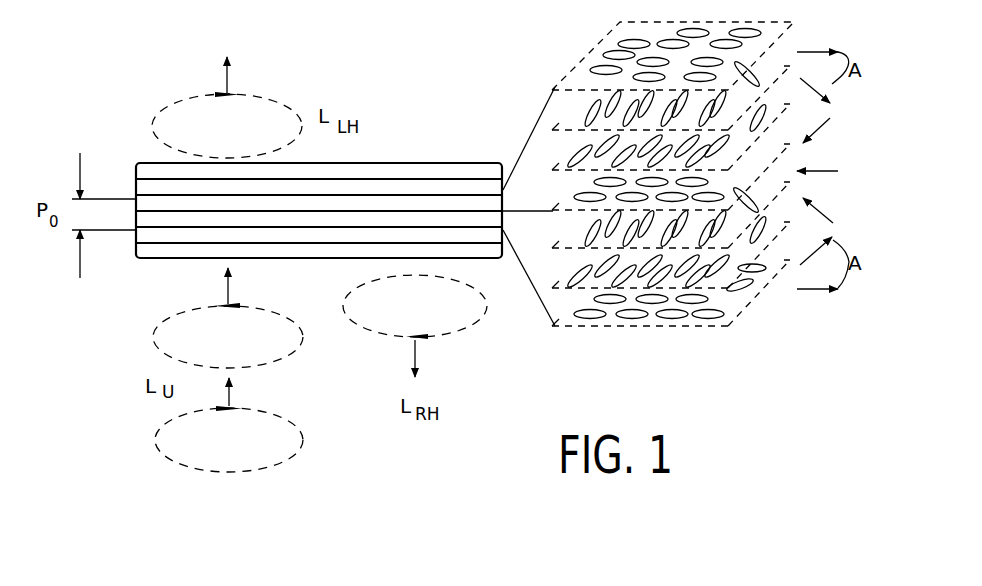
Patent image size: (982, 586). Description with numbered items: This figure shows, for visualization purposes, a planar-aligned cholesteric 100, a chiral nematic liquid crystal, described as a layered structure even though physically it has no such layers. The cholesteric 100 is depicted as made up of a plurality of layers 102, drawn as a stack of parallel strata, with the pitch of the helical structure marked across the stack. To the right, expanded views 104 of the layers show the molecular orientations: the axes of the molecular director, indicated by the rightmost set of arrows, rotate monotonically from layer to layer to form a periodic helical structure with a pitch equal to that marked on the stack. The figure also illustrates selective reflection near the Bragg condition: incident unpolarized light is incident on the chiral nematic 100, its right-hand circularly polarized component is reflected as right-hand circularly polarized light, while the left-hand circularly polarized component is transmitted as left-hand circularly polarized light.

The planar-aligned cholesteric 100 is at (300, 172).
The layers 102 is at (143, 186).
The expanded views showing the molecular orientations 104 is at (779, 62).